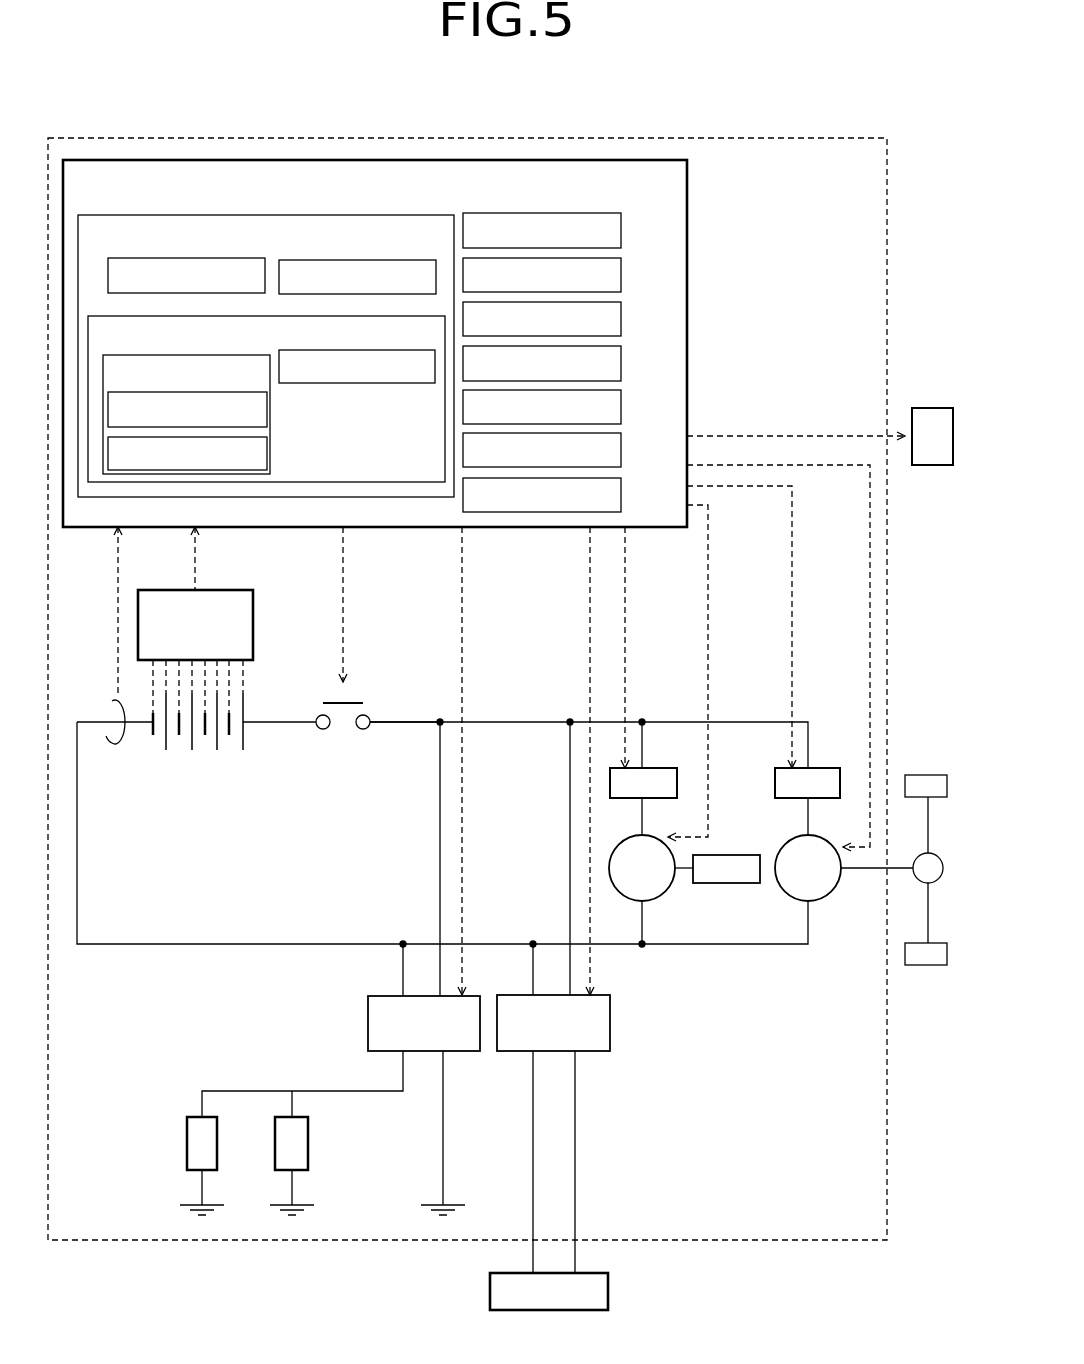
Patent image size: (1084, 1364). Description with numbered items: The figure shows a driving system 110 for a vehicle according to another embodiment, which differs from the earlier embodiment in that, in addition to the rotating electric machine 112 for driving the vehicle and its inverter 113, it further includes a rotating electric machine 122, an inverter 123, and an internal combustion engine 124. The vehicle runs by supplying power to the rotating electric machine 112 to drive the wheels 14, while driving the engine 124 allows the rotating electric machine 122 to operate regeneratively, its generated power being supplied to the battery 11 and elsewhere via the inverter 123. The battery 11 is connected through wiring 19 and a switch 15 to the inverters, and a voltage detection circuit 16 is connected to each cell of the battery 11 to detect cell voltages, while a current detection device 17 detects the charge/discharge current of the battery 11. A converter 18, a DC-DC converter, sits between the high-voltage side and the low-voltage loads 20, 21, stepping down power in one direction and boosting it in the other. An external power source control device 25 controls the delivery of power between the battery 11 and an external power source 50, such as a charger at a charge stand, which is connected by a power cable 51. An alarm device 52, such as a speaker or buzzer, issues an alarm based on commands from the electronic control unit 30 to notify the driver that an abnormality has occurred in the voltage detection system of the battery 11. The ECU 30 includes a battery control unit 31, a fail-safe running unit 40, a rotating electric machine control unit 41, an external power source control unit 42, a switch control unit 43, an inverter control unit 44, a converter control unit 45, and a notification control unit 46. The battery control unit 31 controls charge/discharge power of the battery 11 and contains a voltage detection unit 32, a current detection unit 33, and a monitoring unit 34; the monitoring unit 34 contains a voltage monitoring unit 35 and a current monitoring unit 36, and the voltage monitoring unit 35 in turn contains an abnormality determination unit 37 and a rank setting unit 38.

The driving system 110 is at (803, 138).
The electronic control unit 30 is at (687, 245).
The battery control unit 31 is at (386, 218).
The voltage detection unit 32 is at (243, 260).
The current detection unit 33 is at (382, 260).
The monitoring unit 34 is at (385, 316).
The voltage monitoring unit 35 is at (222, 356).
The current monitoring unit 36 is at (378, 384).
The abnormality determination unit 37 is at (267, 408).
The rank setting unit 38 is at (267, 455).
The fail-safe running unit 40 is at (621, 234).
The rotating electric machine control unit 41 is at (621, 278).
The external power source control unit 42 is at (621, 322).
The switch control unit 43 is at (621, 366).
The inverter control unit 44 is at (621, 410).
The converter control unit 45 is at (621, 453).
The notification control unit 46 is at (621, 498).
The battery 11 is at (205, 752).
The switch 15 is at (343, 732).
The voltage detection circuit 16 is at (253, 608).
The current detection device 17 is at (106, 712).
The converter 18 is at (366, 1023).
The wiring 19 is at (400, 720).
The low-voltage load 20 is at (187, 1147).
The low-voltage load 21 is at (308, 1147).
The external power source control device 25 is at (610, 1022).
The external power source 50 is at (608, 1303).
The power cable 51 is at (575, 1252).
The alarm device 52 is at (922, 408).
The rotating electric machine 122 is at (661, 896).
The inverter 123 is at (677, 755).
The internal combustion engine 124 is at (737, 853).
The rotating electric machine 112 is at (826, 896).
The inverter 113 is at (841, 755).
The wheels 14 is at (926, 842).